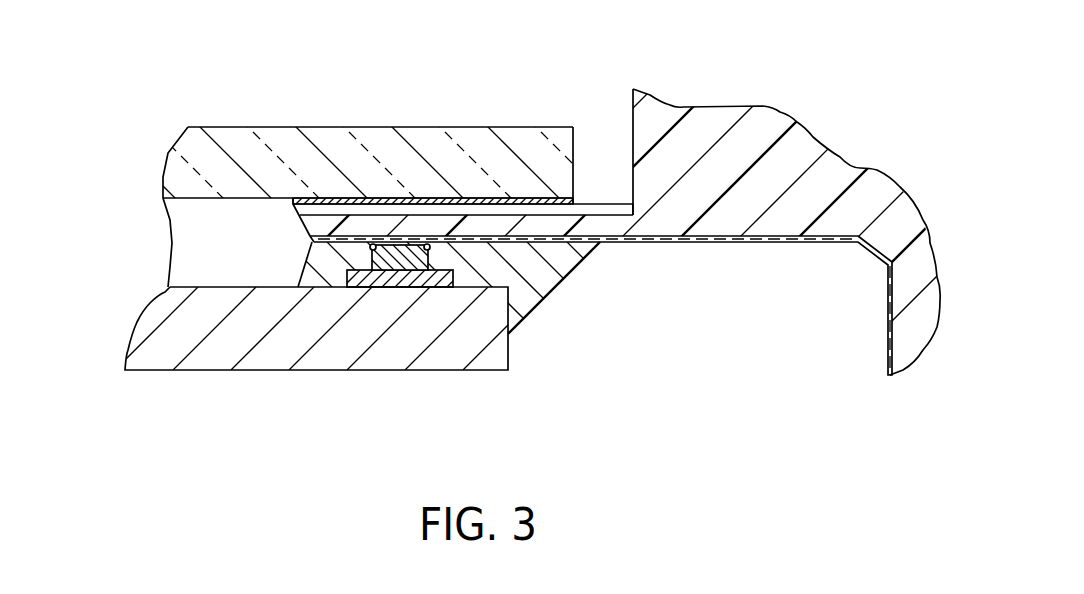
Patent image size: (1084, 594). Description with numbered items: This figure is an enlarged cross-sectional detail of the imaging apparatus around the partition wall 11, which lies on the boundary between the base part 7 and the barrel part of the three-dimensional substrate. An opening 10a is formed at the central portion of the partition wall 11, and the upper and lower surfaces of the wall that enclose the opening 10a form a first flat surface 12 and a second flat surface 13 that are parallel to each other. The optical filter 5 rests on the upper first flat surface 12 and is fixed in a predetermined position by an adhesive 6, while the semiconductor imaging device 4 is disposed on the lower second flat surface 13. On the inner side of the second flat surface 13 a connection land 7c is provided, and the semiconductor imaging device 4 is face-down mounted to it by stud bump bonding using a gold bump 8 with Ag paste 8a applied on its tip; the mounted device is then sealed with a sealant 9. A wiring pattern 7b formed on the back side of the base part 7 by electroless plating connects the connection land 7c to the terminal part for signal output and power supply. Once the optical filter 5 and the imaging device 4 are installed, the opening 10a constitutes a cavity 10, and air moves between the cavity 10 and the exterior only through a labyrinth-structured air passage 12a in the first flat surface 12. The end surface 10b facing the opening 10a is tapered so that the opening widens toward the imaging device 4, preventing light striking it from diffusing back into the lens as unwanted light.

The semiconductor imaging device 4 is at (258, 345).
The optical filter 5 is at (375, 152).
The adhesive 6 is at (528, 200).
The base part 7 is at (818, 134).
The wiring pattern 7b is at (623, 243).
The connection land 7c is at (480, 238).
The bump 8 is at (400, 272).
The Ag paste 8a is at (372, 248).
The sealant 9 is at (563, 283).
The cavity 10 is at (205, 237).
The opening 10a is at (240, 220).
The end surface 10b is at (300, 228).
The partition wall 11 is at (530, 227).
The first flat surface 12 is at (603, 200).
The air passage 12a is at (640, 225).
The second flat surface 13 is at (720, 235).